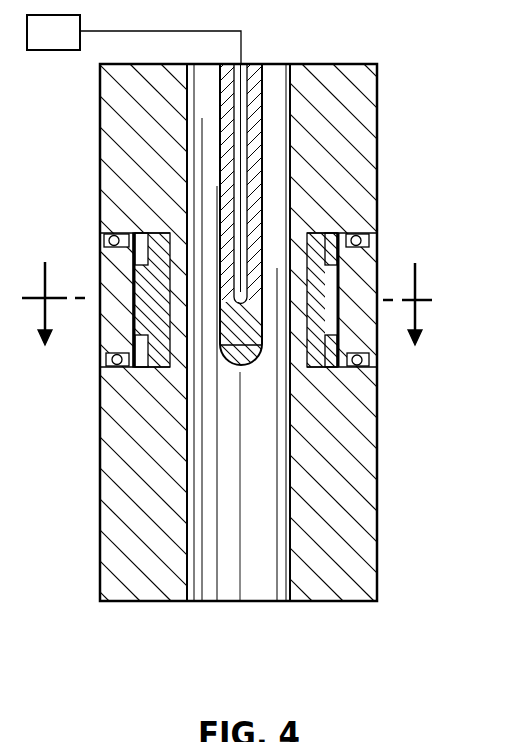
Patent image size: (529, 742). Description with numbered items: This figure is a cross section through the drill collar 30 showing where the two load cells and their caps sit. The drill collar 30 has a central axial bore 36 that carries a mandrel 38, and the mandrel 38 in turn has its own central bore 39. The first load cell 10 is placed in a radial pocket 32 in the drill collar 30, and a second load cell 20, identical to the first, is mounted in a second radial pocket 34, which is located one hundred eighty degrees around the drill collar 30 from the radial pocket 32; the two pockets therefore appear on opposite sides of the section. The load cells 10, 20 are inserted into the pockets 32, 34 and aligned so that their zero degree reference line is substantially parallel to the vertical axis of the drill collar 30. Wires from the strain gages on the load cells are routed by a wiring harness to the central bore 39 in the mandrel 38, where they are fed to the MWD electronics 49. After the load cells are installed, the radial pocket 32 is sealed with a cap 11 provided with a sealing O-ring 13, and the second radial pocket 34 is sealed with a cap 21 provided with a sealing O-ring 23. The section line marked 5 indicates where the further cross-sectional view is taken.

The drill collar 30 is at (72, 136).
The central axial bore 36 is at (258, 563).
The mandrel 38 is at (262, 84).
The central bore 39 is at (242, 108).
The MWD electronics 49 is at (134, 39).
The second load cell 20 is at (146, 284).
The load cell 10 is at (328, 279).
The sealing O-ring 23 is at (102, 234).
The cap 21 is at (110, 311).
The second radial pocket 34 is at (101, 360).
The radial pocket 32 is at (377, 233).
The cap 11 is at (362, 288).
The sealing O-ring 13 is at (357, 360).
The section line 5- 5 is at (227, 303).